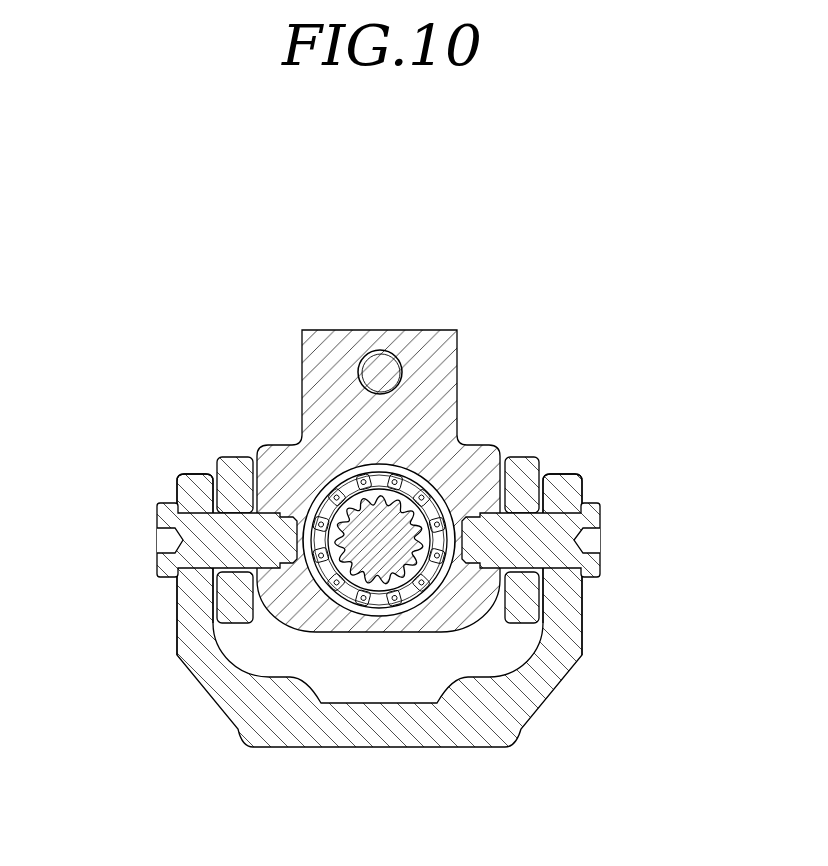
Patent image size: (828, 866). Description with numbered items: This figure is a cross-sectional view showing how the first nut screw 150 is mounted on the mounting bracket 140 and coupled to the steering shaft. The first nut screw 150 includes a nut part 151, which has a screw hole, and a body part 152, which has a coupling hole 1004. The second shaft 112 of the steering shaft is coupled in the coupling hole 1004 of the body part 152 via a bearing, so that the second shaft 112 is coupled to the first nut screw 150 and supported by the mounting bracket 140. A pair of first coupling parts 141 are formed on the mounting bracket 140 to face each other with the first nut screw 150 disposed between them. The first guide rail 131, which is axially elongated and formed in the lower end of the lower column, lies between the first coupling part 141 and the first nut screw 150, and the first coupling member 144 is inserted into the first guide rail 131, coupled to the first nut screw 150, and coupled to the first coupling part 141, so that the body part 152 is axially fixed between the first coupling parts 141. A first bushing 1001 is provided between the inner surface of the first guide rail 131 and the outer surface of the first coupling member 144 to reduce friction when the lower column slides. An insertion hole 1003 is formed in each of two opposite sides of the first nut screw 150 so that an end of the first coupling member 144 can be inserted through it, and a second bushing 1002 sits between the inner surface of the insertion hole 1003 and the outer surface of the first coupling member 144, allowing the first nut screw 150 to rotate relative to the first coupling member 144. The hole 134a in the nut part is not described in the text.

The hinge hole 134a is at (380, 369).
The first nut screw 150 is at (461, 476).
The nut part 151 is at (445, 378).
The body part 152 is at (485, 458).
The second bushing 1002 is at (508, 510).
The first bushing 1001 is at (543, 500).
The first guide rail 131 is at (232, 473).
The second shaft 112 is at (373, 533).
The first coupling member 144 is at (212, 538).
The first coupling part 141 is at (190, 613).
The coupling hole 1004 is at (323, 603).
The mounting bracket 140 is at (363, 644).
The insertion hole 1003 is at (472, 570).